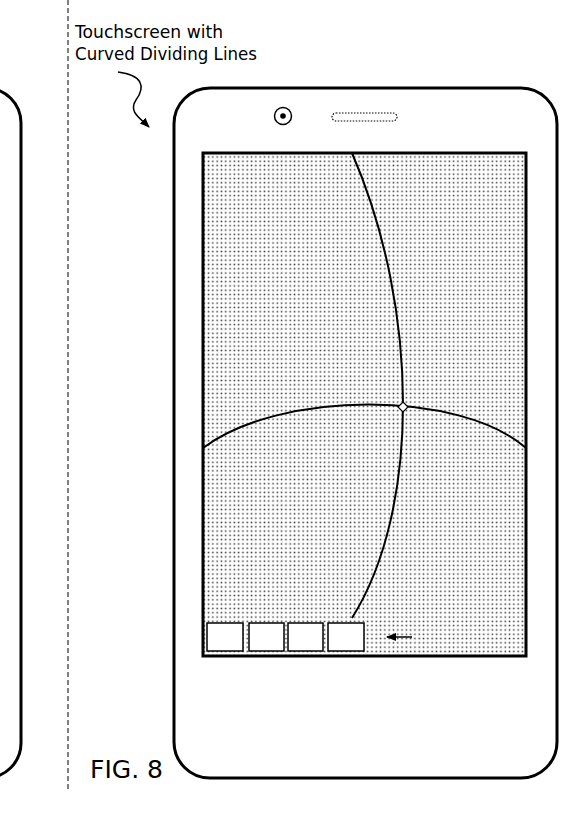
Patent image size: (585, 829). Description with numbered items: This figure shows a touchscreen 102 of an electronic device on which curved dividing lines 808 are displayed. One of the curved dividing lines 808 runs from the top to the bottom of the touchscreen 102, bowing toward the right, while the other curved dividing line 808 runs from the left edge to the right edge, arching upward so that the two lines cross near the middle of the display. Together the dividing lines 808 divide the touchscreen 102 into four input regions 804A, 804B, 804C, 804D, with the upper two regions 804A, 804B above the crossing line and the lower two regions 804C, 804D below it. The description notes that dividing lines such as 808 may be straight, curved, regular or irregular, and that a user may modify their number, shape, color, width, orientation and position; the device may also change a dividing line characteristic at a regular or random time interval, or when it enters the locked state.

The touchscreen 102 is at (207, 152).
The curved dividing lines 808 is at (367, 180).
The input region 804A is at (292, 288).
The input region 804B is at (453, 288).
The input region 804C is at (292, 540).
The input region 804D is at (455, 540).